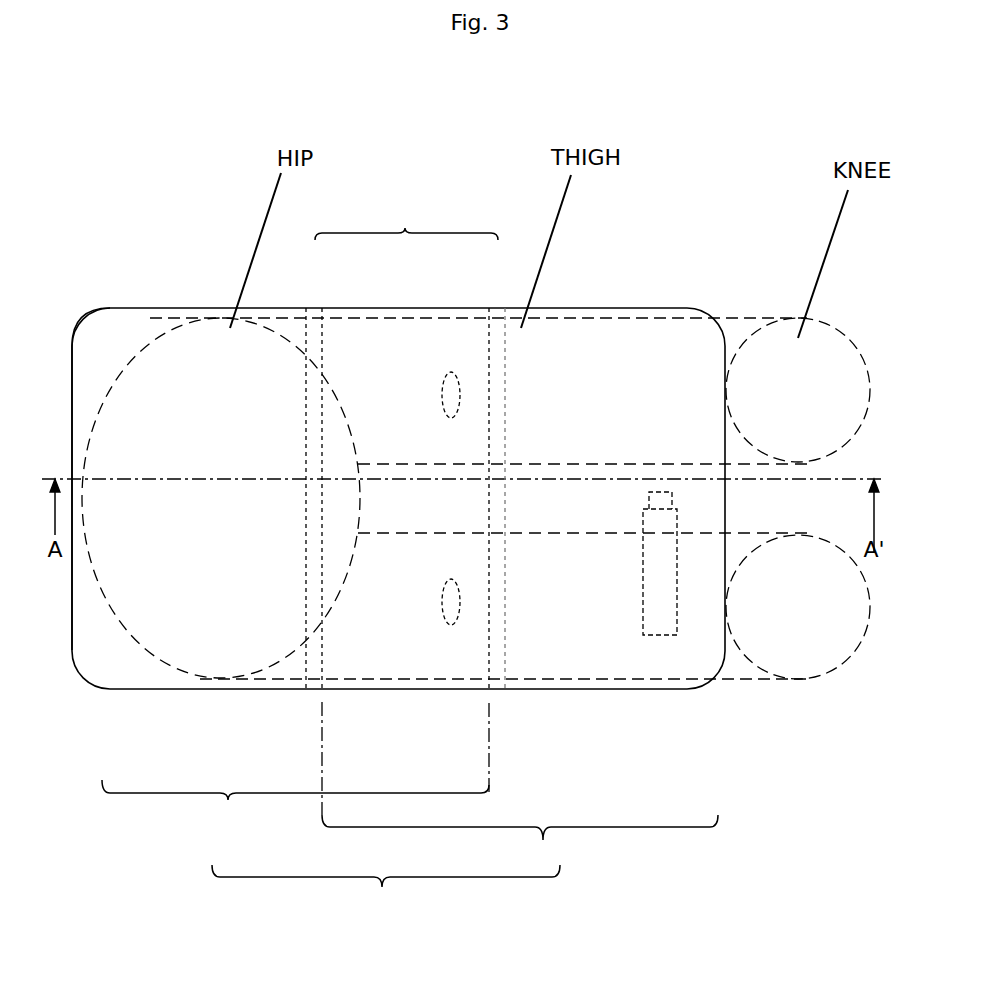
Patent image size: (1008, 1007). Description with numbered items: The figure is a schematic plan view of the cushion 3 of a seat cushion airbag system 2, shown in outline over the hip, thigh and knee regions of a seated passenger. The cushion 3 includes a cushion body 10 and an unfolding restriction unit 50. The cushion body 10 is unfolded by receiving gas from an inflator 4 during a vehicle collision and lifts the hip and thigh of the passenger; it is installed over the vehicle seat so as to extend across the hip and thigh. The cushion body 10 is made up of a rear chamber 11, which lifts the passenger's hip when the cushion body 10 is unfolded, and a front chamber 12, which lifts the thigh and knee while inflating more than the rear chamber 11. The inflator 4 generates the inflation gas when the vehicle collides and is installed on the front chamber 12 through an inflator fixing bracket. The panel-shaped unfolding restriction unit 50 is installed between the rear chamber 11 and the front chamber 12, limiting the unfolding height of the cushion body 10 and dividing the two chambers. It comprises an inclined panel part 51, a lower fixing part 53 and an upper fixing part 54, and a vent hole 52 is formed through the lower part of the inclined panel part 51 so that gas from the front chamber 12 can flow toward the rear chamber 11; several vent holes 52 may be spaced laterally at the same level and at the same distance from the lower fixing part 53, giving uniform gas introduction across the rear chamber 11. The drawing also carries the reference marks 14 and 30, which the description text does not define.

The seat cushion airbag system 2 is at (106, 172).
The cushion 3 is at (121, 686).
The inflator 4 is at (672, 503).
The cushion body 10 is at (386, 890).
The rear chamber 11 is at (285, 574).
The front chamber 12 is at (520, 784).
The boundary line 14 is at (427, 665).
The thigh zone region 30 is at (611, 654).
The unfolding restriction unit 50 is at (406, 220).
The inclined panel part 51 is at (407, 335).
The vent hole 52 is at (455, 603).
The lower fixing part 53 is at (500, 335).
The upper fixing part 54 is at (318, 335).